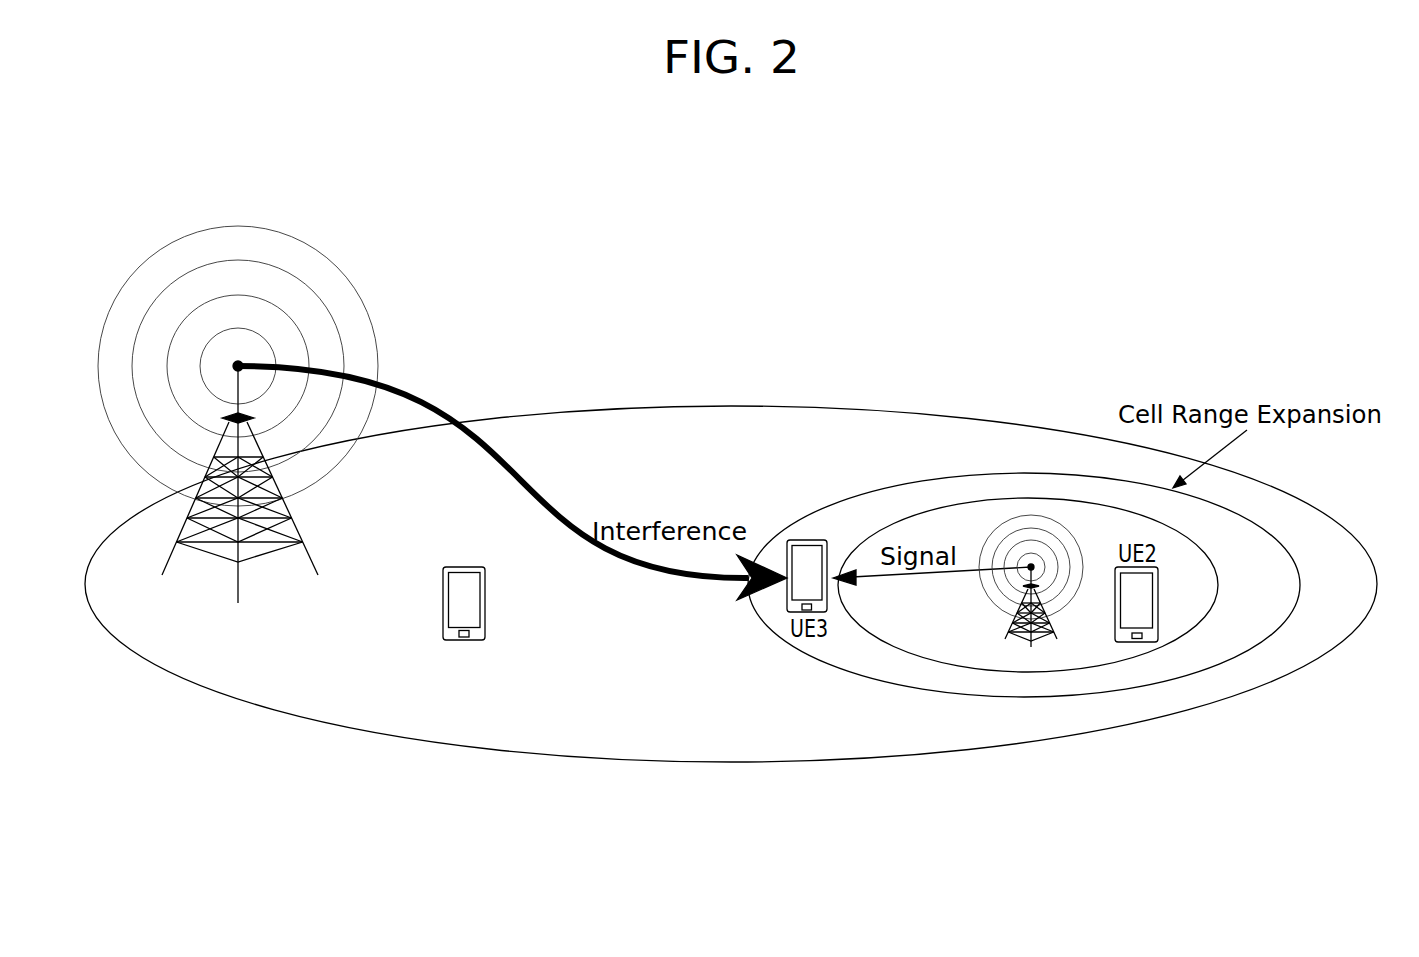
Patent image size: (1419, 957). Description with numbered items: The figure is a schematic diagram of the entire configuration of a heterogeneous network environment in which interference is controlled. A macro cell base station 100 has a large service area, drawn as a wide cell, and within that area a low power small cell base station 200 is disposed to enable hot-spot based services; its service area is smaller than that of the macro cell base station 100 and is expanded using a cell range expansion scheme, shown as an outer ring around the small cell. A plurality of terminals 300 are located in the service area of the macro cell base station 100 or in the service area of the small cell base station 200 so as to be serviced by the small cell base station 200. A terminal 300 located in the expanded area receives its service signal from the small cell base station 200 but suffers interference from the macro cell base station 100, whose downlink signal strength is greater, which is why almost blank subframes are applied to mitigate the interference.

The macro cell base station 100 is at (297, 519).
The small cell base station 200 is at (1015, 613).
The terminal 300 is at (485, 615).